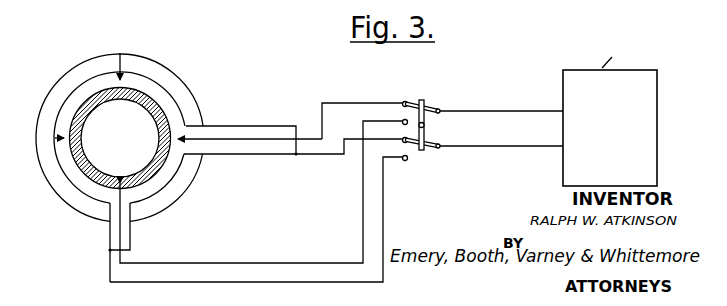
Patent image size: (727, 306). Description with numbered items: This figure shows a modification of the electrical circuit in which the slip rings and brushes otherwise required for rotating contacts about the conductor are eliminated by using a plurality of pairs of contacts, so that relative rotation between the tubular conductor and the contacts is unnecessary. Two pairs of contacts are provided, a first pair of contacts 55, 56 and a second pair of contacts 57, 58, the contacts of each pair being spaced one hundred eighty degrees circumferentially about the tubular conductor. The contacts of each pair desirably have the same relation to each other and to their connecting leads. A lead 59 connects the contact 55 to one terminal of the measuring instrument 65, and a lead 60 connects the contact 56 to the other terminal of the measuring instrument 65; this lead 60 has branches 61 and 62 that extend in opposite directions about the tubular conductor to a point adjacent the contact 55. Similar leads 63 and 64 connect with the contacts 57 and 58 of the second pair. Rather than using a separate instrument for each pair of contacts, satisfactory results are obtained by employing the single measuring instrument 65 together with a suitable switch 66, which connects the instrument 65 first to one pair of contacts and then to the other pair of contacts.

The contact 55 is at (176, 145).
The contact 56 is at (55, 138).
The contact 57 is at (115, 202).
The contact 58 is at (112, 80).
The lead 59 is at (356, 91).
The lead 60 is at (328, 157).
The branch 61 is at (244, 155).
The branch 62 is at (246, 117).
The lead 63 is at (207, 259).
The lead 64 is at (147, 278).
The measuring instrument 65 is at (552, 104).
The switch 66 is at (430, 105).